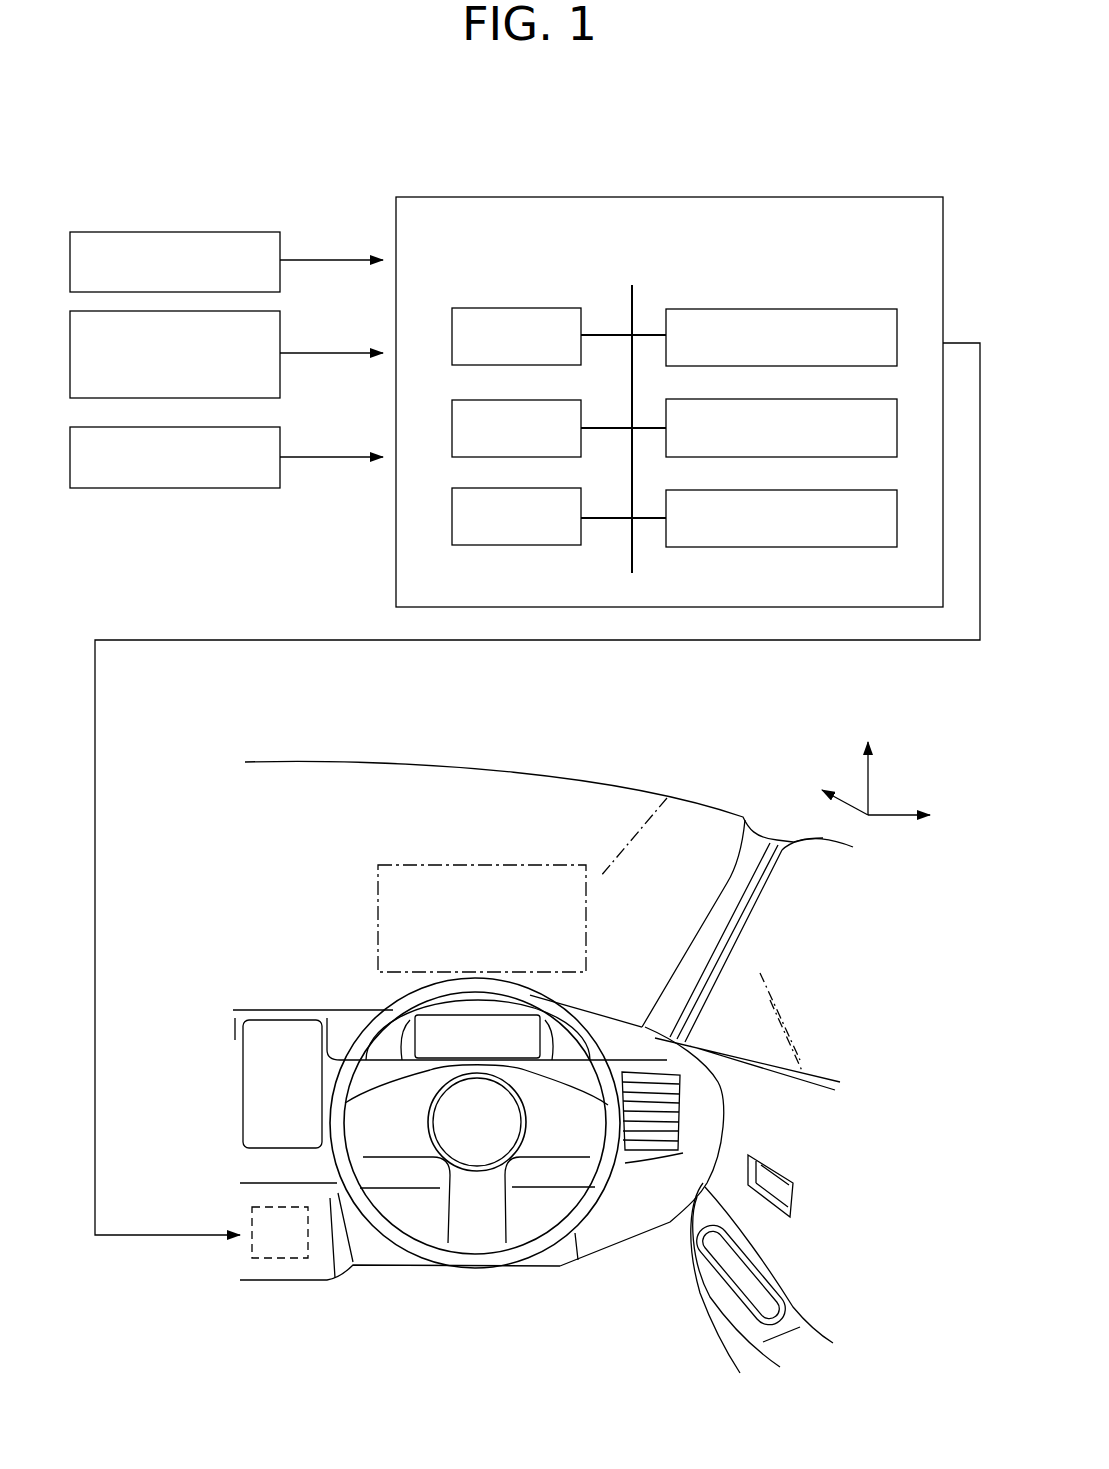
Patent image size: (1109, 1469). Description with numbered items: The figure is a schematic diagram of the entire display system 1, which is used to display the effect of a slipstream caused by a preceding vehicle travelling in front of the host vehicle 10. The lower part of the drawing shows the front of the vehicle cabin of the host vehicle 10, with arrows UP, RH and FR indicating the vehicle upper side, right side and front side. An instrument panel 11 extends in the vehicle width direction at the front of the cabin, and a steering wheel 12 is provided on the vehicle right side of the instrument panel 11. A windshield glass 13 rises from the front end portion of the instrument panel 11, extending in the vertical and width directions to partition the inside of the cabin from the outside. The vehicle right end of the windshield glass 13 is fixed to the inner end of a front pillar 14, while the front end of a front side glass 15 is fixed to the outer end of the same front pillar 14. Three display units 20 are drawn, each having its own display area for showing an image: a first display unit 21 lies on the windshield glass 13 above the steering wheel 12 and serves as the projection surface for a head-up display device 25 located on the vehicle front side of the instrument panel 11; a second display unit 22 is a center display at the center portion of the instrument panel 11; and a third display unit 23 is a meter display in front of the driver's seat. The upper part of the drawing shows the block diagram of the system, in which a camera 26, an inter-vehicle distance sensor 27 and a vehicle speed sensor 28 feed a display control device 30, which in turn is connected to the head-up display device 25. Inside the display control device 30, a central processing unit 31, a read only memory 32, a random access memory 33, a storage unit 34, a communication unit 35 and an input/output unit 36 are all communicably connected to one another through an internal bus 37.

The display system 1 is at (847, 131).
The host vehicle 10 is at (625, 746).
The instrument panel 11 is at (623, 1228).
The steering wheel 12 is at (598, 1037).
The windshield glass 13 is at (527, 790).
The front pillar 14 is at (748, 927).
The front side glass 15 is at (827, 1053).
The display unit 20 is at (355, 972).
The first display unit 21 is at (413, 883).
The second display unit 22 is at (263, 1130).
The third display unit 23 is at (430, 1035).
The head-up display device 25 is at (250, 1245).
The camera 26 is at (283, 242).
The inter-vehicle distance sensor 27 is at (283, 336).
The vehicle speed sensor 28 is at (283, 440).
The display control device 30 is at (679, 194).
The central processing unit (CPU) 31 is at (525, 308).
The read only memory (ROM) 32 is at (525, 400).
The random access memory (RAM) 33 is at (525, 488).
The storage unit 34 is at (815, 309).
The communication unit 35 is at (815, 399).
The input/output unit 36 is at (815, 490).
The internal bus 37 is at (634, 565).